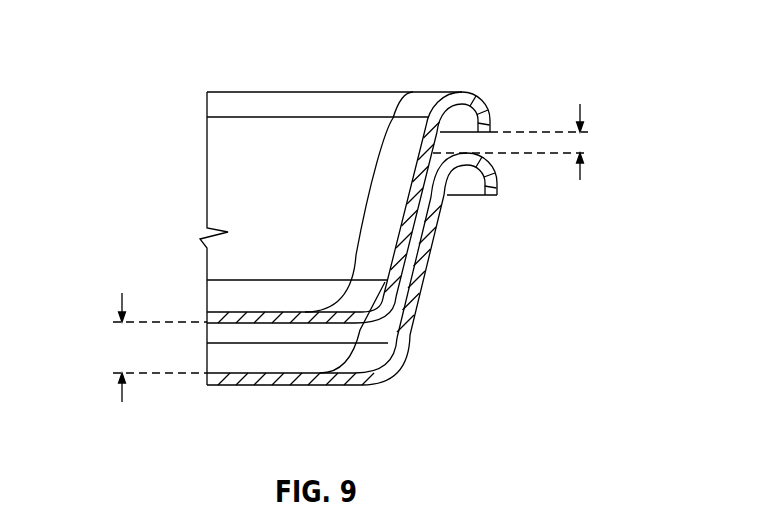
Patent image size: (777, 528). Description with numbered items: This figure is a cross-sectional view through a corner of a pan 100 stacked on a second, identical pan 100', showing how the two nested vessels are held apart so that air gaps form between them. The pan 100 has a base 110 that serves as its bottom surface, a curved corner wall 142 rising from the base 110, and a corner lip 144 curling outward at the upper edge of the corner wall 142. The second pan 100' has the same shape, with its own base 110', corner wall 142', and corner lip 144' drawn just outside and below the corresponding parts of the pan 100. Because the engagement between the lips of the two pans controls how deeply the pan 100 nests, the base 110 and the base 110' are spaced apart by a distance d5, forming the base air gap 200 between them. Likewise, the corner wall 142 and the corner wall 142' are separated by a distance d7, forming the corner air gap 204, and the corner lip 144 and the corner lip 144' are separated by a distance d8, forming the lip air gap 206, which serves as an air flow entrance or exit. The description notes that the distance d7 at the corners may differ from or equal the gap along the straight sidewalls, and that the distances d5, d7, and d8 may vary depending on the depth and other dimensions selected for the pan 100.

The pan 100 is at (376, 198).
The second pan 100' is at (393, 308).
The base 110 is at (301, 284).
The base of second pan 110' is at (308, 394).
The corner walls 142 is at (376, 210).
The corner walls of second pan 142' is at (453, 266).
The corner lips 144 is at (489, 101).
The corner lips of second pan 144' is at (505, 180).
The base air gap 200 is at (324, 361).
The corner air gap 204 is at (407, 246).
The lip air gap 206 is at (454, 130).
The distance d5 is at (121, 383).
The distance d7 is at (409, 327).
The distance d8 is at (581, 105).